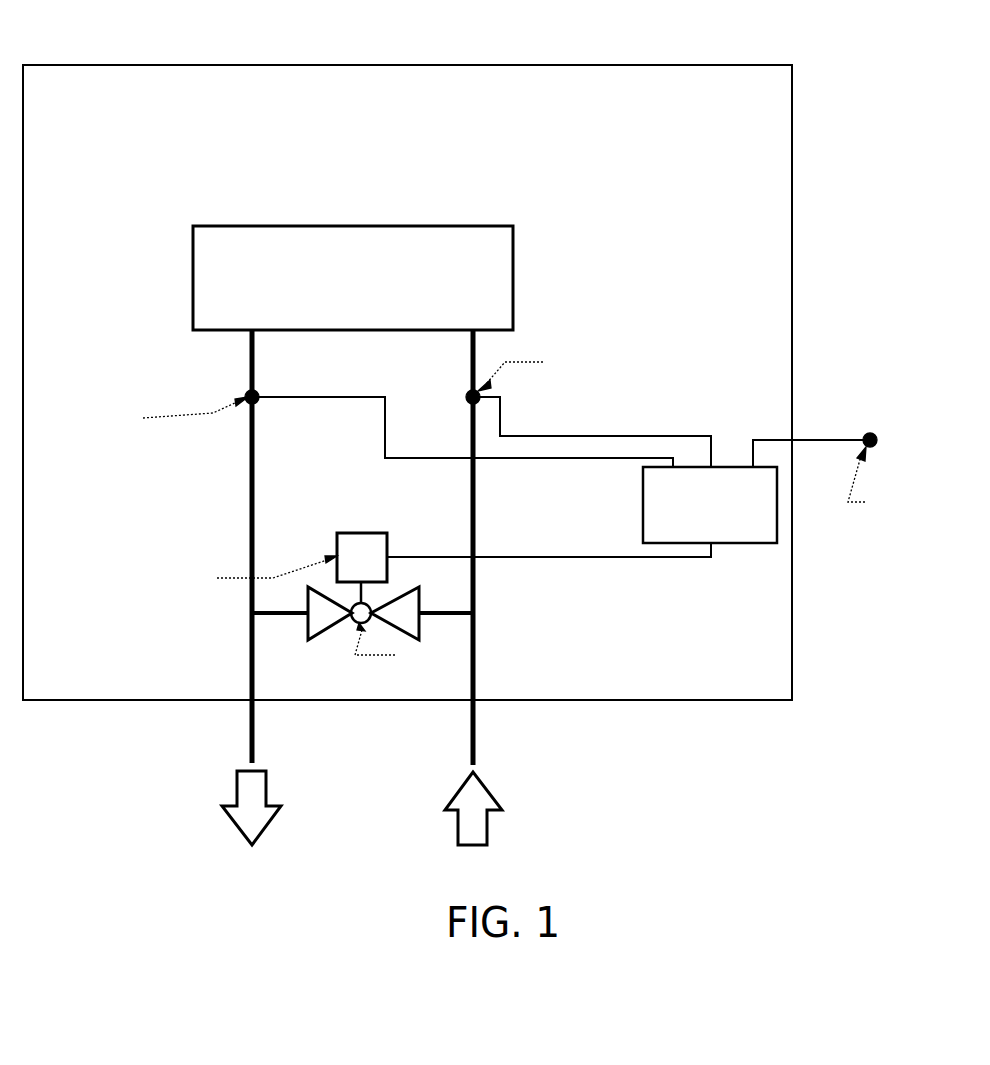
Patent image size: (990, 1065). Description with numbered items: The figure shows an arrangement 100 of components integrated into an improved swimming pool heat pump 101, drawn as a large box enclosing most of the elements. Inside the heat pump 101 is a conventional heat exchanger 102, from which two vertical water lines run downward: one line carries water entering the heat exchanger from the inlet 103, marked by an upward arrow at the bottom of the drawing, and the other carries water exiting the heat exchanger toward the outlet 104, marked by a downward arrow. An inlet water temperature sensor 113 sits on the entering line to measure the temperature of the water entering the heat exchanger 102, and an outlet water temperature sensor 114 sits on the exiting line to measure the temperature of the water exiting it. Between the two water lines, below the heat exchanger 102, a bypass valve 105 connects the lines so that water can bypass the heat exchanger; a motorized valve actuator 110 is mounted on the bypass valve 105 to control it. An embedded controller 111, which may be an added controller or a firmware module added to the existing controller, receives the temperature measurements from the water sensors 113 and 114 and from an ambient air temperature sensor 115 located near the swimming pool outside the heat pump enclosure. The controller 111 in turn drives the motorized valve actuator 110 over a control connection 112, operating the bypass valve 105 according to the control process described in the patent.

The arrangement 100 is at (516, 26).
The swimming pool heat pump 101 is at (699, 127).
The heat exchanger 102 is at (443, 261).
The water inlet 103 is at (453, 881).
The water outlet 104 is at (226, 881).
The bypass valve 105 is at (329, 632).
The motorized valve actuator 110 is at (357, 530).
The embedded controller 111 is at (742, 545).
The control 112 is at (615, 557).
The inlet water temperature sensor 113 is at (468, 394).
The outlet water temperature sensor 114 is at (260, 392).
The ambient air temperature sensor 115 is at (883, 425).